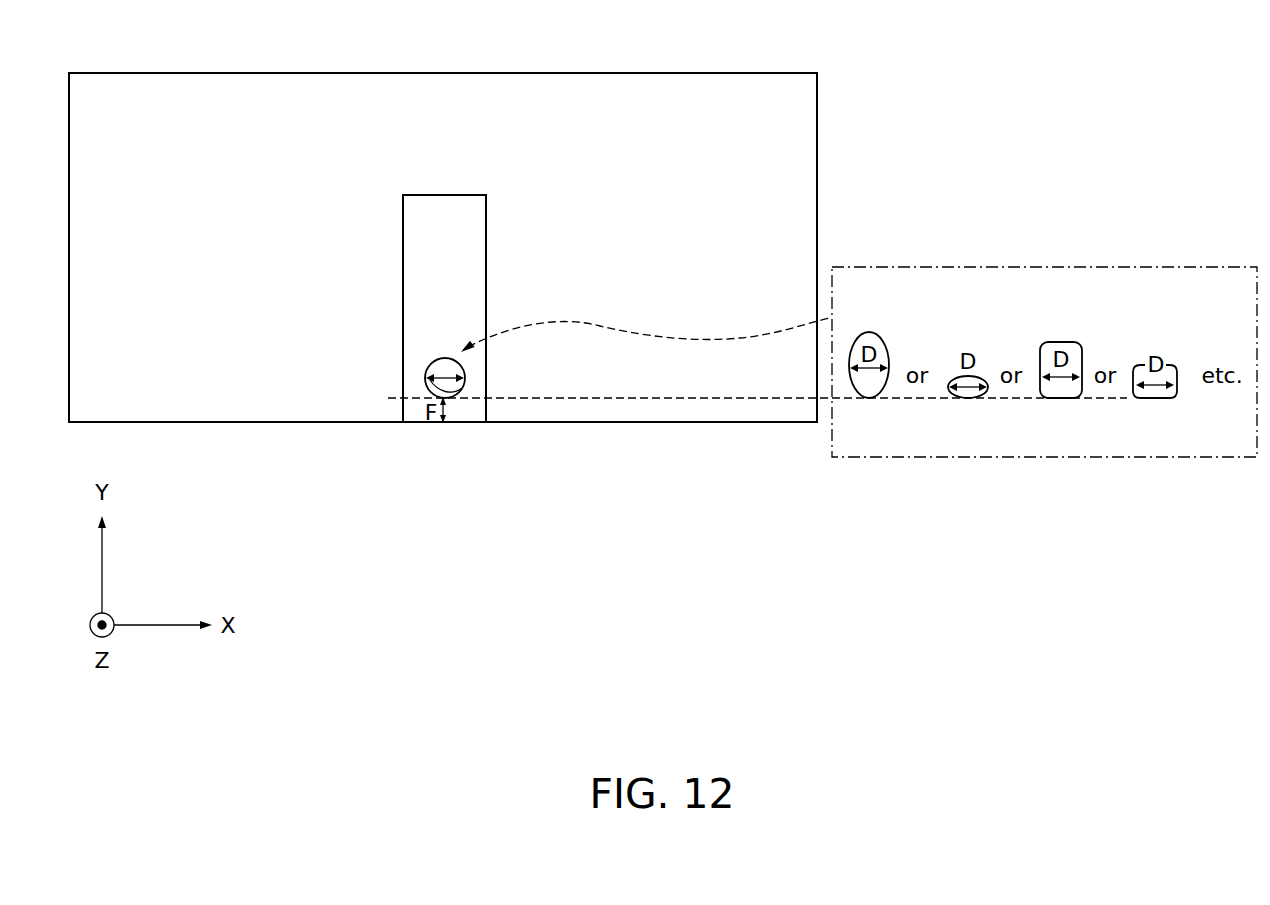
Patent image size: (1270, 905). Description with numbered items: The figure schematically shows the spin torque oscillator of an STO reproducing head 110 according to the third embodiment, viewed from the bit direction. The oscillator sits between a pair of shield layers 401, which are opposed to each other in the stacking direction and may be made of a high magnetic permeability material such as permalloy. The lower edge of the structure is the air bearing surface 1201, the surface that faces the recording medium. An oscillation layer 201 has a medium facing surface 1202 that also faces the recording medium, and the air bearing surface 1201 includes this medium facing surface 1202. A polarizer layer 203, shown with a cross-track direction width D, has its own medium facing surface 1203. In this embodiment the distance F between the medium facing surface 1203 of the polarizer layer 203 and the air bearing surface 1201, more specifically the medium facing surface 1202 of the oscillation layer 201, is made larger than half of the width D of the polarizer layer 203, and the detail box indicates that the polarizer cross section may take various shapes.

The STO reproducing head 110 is at (88, 48).
The oscillation layer 201 is at (443, 210).
The shield layers 401 is at (655, 100).
The medium facing surface of the polarizer layer 1203 is at (428, 389).
The polarizer layer 203 is at (454, 392).
The medium facing surface of the oscillation layer 1202 is at (415, 423).
The air bearing surface 1201 is at (678, 423).